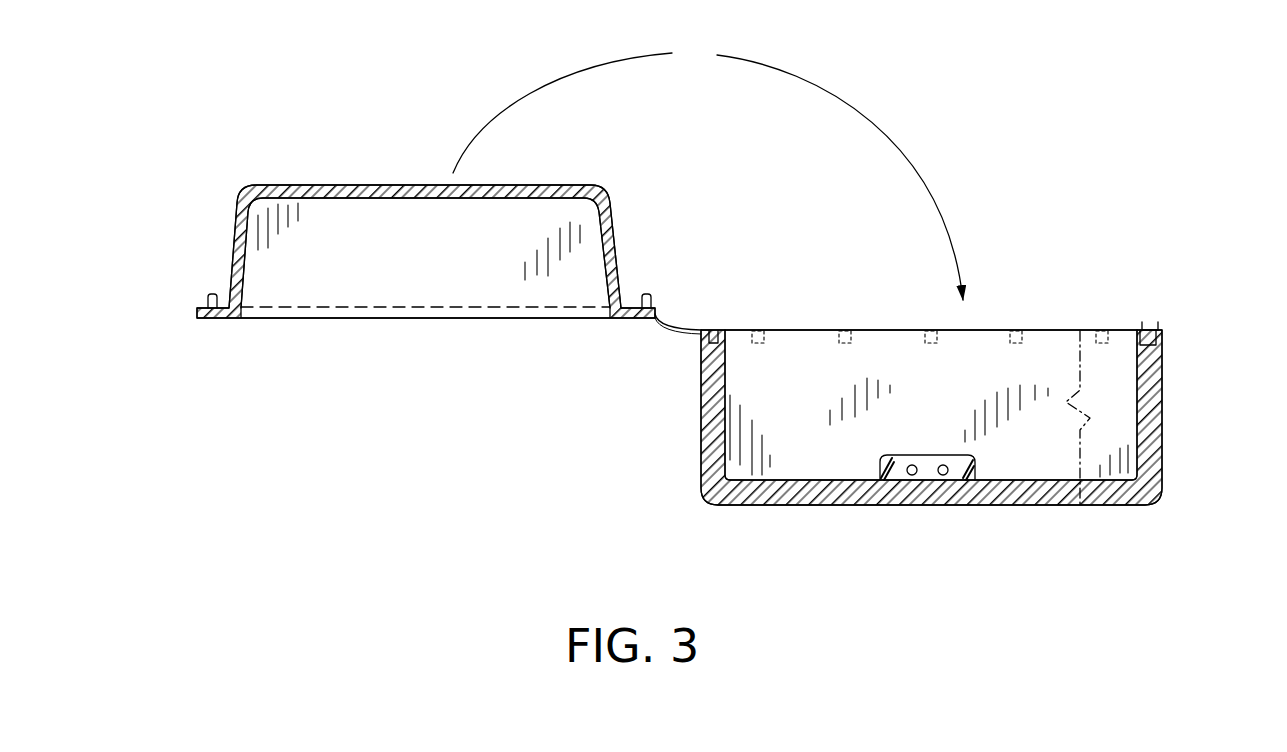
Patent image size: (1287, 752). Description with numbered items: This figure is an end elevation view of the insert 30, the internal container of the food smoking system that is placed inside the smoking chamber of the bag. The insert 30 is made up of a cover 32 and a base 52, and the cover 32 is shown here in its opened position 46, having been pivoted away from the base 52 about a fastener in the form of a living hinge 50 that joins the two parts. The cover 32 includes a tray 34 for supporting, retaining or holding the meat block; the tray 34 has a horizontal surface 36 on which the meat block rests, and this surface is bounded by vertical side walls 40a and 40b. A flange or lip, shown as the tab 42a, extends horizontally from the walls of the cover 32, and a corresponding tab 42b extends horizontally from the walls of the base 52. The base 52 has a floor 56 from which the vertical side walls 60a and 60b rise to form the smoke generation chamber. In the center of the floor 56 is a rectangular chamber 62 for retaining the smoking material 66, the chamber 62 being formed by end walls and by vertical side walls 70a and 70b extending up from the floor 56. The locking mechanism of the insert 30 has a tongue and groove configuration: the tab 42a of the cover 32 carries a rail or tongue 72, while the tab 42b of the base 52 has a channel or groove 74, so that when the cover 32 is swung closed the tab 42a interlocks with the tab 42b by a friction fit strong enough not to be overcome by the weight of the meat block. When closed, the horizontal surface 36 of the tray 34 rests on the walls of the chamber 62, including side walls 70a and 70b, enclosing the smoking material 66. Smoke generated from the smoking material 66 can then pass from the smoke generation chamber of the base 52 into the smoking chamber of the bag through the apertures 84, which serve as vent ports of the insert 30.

The insert 30 is at (1054, 148).
The cover 32 is at (240, 178).
The tray 34 is at (405, 346).
The horizontal surface 36 is at (372, 185).
The vertical side wall 40a is at (247, 245).
The vertical side wall 40b is at (614, 250).
The tab 42a is at (212, 318).
The tab 42b is at (722, 330).
The opened position 46 is at (708, 169).
The living hinge 50 is at (668, 323).
The base 52 is at (1180, 360).
The floor 56 is at (1024, 502).
The vertical side wall 60a is at (701, 422).
The vertical side wall 60b is at (1163, 426).
The chamber 62 is at (926, 446).
The smoking material 66 is at (913, 476).
The vertical side wall 70a is at (882, 460).
The vertical side wall 70b is at (976, 470).
The tongue 72 is at (210, 296).
The groove 74 is at (714, 331).
The apertures 84 is at (1052, 326).